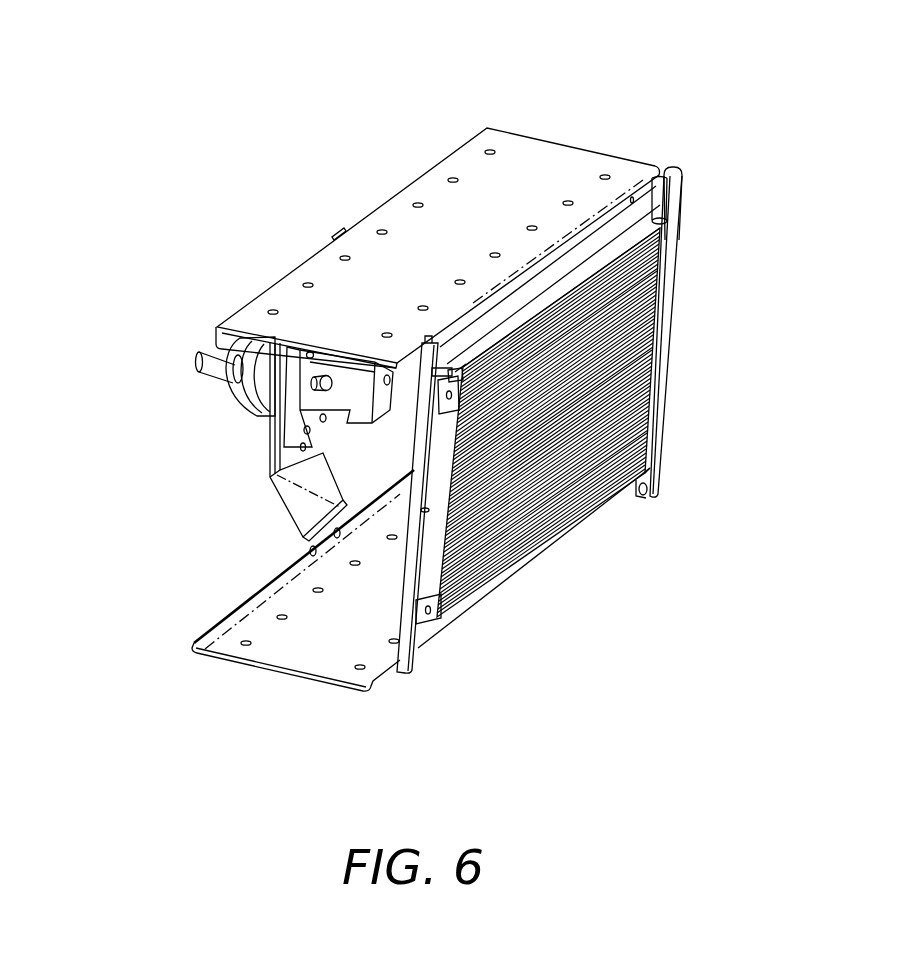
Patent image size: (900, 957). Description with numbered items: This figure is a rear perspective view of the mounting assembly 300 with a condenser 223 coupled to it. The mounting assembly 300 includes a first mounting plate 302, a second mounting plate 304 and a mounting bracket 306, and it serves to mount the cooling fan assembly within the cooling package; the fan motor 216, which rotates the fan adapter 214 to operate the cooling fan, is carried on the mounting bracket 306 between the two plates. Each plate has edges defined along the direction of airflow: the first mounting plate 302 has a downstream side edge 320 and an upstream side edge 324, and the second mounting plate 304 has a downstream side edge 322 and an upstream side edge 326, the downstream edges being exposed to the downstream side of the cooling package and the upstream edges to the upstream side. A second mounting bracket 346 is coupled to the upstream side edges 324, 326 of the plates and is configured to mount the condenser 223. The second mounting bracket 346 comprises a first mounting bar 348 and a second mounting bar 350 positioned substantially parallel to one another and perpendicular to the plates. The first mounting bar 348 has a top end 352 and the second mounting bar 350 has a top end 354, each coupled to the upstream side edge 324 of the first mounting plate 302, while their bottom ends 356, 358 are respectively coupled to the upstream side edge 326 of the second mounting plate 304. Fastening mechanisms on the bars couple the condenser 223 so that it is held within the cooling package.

The mounting assembly 300 is at (783, 118).
The first mounting plate 302 is at (571, 151).
The second mounting plate 304 is at (293, 656).
The mounting bracket 306 is at (283, 510).
The downstream side edge 320 is at (383, 201).
The downstream side edge 322 is at (215, 609).
The upstream side edge 324 is at (580, 243).
The upstream side edge 326 is at (554, 559).
The second mounting bracket 346 is at (669, 418).
The first mounting bar 348 is at (682, 199).
The second mounting bar 350 is at (408, 363).
The top end 352 is at (661, 213).
The top end 354 is at (458, 366).
The bottom end 356 is at (646, 500).
The bottom end 358 is at (419, 650).
The condenser 223 is at (652, 353).
The fan adapter 214 is at (208, 368).
The fan motor 216 is at (250, 407).